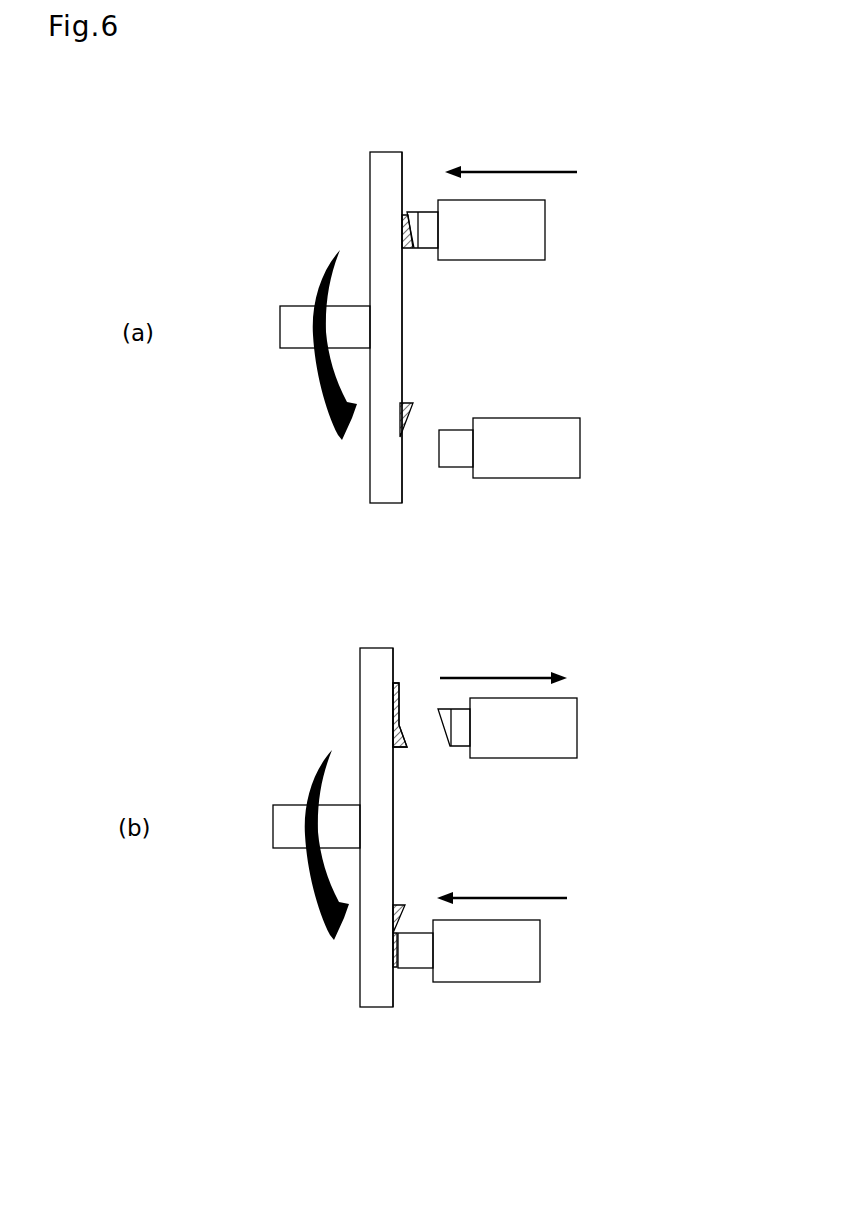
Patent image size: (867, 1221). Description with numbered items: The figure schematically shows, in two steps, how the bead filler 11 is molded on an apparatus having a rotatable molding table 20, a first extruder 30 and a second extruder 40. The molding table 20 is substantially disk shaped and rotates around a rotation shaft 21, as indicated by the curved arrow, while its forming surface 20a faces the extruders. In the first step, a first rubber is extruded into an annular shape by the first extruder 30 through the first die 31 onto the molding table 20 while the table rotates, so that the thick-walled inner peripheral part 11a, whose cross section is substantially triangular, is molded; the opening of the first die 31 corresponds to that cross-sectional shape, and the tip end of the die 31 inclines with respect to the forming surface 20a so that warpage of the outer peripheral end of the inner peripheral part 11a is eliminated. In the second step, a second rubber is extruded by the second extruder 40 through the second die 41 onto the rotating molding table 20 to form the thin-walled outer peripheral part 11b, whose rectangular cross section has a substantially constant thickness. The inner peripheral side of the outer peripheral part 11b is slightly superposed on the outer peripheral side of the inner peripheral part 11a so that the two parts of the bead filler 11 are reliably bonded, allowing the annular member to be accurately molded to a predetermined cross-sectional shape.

The molding table 20 is at (385, 151).
The forming surface 20a is at (402, 165).
The rotation shaft 21 is at (300, 306).
The first extruder 30 is at (558, 227).
The first die 31 is at (417, 250).
The second extruder 40 is at (588, 447).
The second die 41 is at (453, 467).
The bead filler 11 is at (408, 692).
The inner peripheral part 11a is at (405, 250).
The outer peripheral part 11b is at (401, 700).